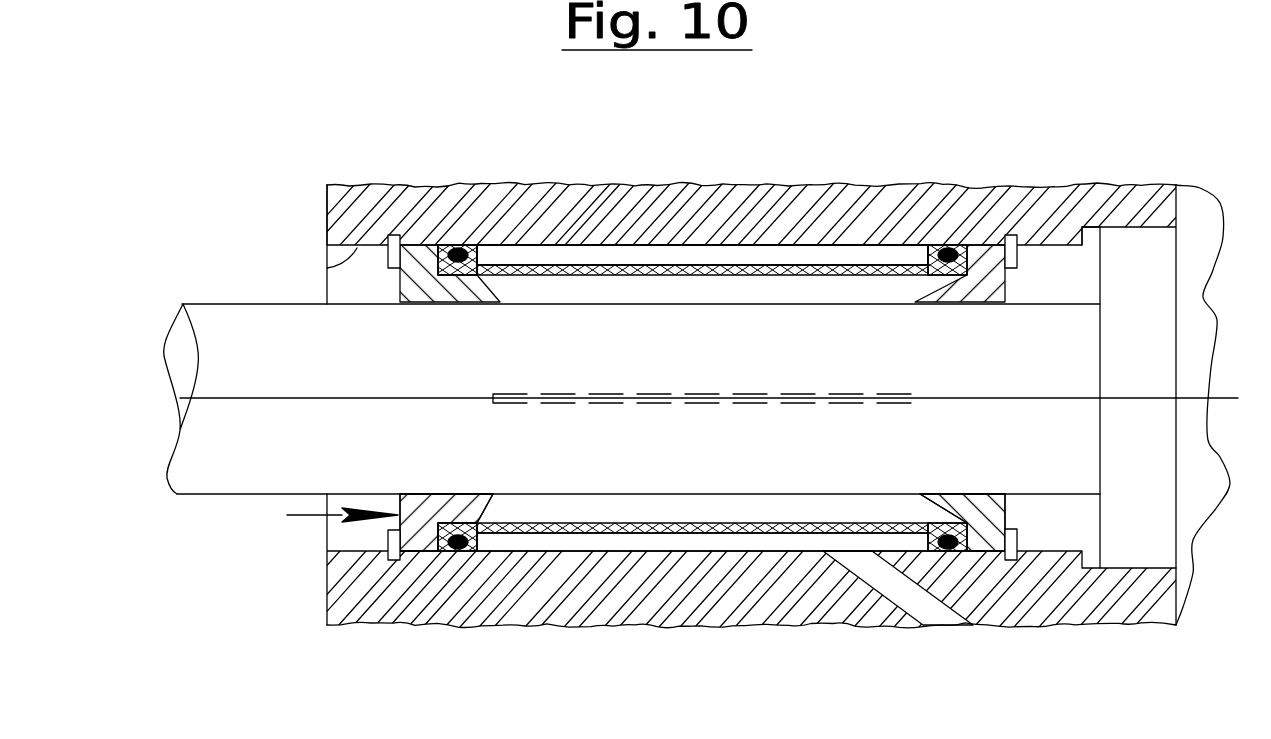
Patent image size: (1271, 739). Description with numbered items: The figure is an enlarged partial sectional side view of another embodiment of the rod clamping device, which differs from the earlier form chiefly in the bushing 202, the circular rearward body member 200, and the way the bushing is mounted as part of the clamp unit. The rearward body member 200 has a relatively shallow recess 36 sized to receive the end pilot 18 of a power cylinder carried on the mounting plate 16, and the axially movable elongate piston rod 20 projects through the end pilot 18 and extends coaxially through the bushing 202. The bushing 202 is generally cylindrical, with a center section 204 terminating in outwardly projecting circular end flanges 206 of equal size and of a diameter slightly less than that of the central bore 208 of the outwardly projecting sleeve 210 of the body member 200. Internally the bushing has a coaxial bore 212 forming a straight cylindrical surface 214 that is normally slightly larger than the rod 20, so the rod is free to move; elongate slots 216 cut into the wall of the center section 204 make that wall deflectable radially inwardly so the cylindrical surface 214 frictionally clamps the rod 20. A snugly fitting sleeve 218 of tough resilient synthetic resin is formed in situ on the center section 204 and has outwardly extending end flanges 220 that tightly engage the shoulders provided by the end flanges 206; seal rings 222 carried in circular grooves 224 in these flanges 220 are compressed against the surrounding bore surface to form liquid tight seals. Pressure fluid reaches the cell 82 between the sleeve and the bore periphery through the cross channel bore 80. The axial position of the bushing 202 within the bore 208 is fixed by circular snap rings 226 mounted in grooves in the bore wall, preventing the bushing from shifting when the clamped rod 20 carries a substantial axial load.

The mounting plate 16 is at (751, 430).
The end pilot 18 is at (1114, 304).
The piston rod 20 is at (234, 367).
The recess 36 is at (1133, 227).
The cross channel bore 80 is at (878, 626).
The cell 82 is at (853, 252).
The rearward body member 200 is at (1008, 192).
The bushing 202 is at (318, 518).
The center section 204 is at (635, 293).
The end flanges 206 is at (428, 247).
The central bore 208 is at (327, 268).
The sleeve 210 is at (327, 213).
The bore 212 is at (445, 506).
The cylindrical surface 214 is at (970, 497).
The slots 216 is at (562, 395).
The sleeve 218 is at (762, 267).
The end flanges 220 is at (473, 250).
The seal rings 222 is at (460, 550).
The grooves 224 is at (477, 540).
The snap rings 226 is at (388, 252).